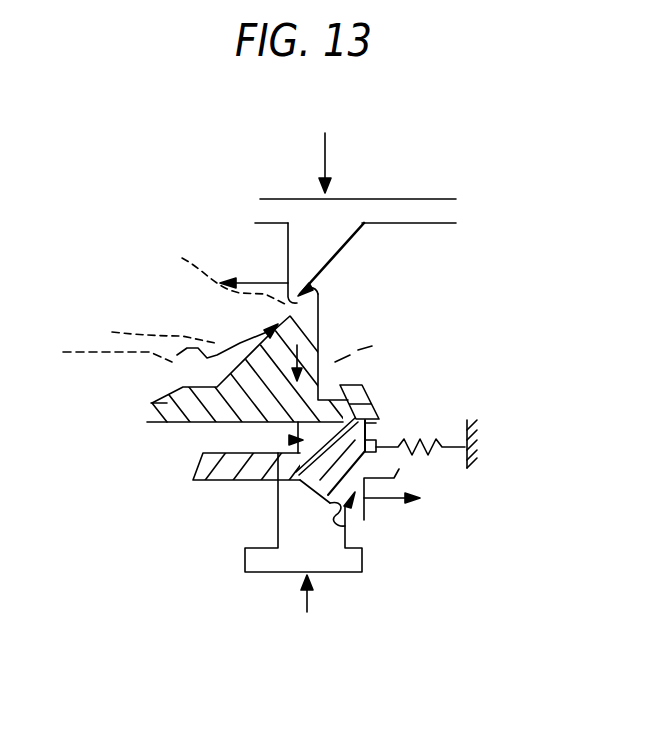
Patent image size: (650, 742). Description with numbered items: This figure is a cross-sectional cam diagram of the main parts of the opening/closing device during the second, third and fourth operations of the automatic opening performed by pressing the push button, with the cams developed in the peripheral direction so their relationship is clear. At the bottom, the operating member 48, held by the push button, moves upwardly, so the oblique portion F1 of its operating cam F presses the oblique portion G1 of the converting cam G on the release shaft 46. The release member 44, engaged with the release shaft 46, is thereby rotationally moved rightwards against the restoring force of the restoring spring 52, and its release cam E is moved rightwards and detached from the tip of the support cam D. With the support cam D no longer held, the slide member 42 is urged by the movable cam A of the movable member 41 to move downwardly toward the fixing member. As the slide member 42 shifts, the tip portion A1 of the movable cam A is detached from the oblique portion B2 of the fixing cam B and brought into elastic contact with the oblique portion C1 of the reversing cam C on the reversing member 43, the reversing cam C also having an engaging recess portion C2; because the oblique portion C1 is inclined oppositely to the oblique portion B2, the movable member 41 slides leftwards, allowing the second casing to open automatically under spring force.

The movable member 41 is at (363, 213).
The slide member 42 is at (157, 397).
The reversing member 43 is at (202, 349).
The release member 44 is at (222, 464).
The release shaft 46 is at (219, 465).
The operating member 48 is at (258, 565).
The restoring spring 52 is at (445, 447).
The movable cam A is at (322, 276).
The tip portion A1 is at (318, 302).
The fixing cam B is at (270, 330).
The oblique portion B2 is at (320, 320).
The reversing cam C is at (287, 313).
The oblique portion C1 is at (218, 268).
The engaging recess portion C2 is at (146, 329).
The support cam D is at (290, 439).
The release cam E is at (367, 430).
The operating cam F is at (310, 493).
The oblique portion F1 is at (310, 505).
The converting cam G is at (367, 512).
The oblique portion G1 is at (347, 535).